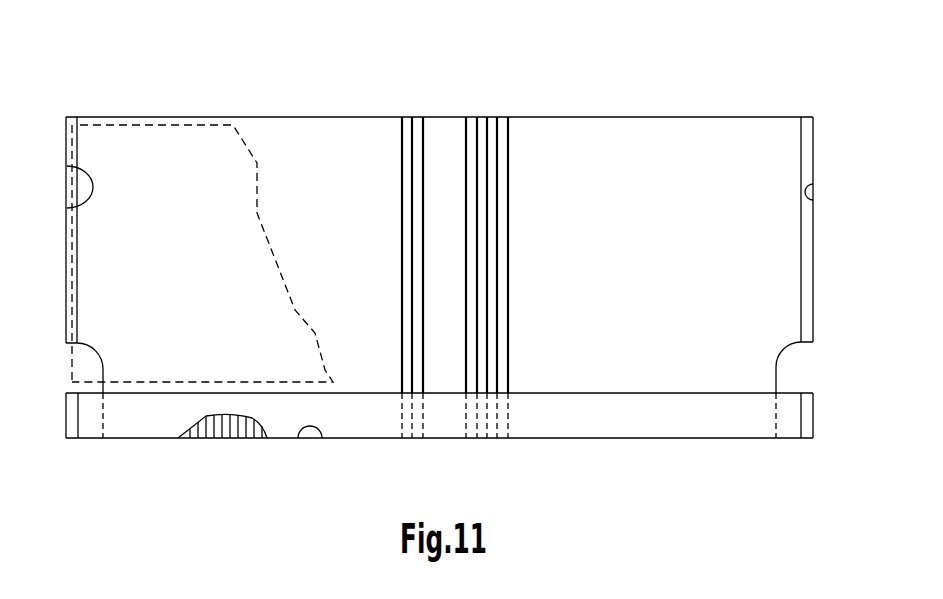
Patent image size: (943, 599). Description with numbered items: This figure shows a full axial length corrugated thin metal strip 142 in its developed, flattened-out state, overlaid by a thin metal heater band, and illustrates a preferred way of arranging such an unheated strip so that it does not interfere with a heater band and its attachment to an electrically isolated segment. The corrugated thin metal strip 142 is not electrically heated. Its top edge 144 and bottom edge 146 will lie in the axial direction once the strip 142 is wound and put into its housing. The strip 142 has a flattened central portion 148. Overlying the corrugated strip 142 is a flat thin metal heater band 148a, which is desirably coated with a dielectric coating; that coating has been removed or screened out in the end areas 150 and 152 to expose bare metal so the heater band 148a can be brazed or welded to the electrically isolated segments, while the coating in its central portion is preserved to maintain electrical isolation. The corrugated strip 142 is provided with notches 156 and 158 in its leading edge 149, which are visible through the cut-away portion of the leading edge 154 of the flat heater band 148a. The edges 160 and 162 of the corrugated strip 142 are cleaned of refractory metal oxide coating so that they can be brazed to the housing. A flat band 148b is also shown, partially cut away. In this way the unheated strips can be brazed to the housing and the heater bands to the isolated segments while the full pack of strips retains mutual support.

The corrugated thin metal strip 142 is at (580, 155).
The top edge 144 is at (808, 182).
The bottom edge 146 is at (72, 168).
The flattened central portion 148 is at (442, 127).
The flat thin metal heater band 148a is at (358, 417).
The flat band 148b is at (257, 163).
The leading edge 149 is at (223, 428).
The end area 150 is at (67, 436).
The end area 152 is at (805, 438).
The leading edge 154 is at (307, 438).
The notch 156 is at (83, 368).
The notch 158 is at (787, 375).
The edge 160 is at (72, 117).
The edge 162 is at (807, 117).